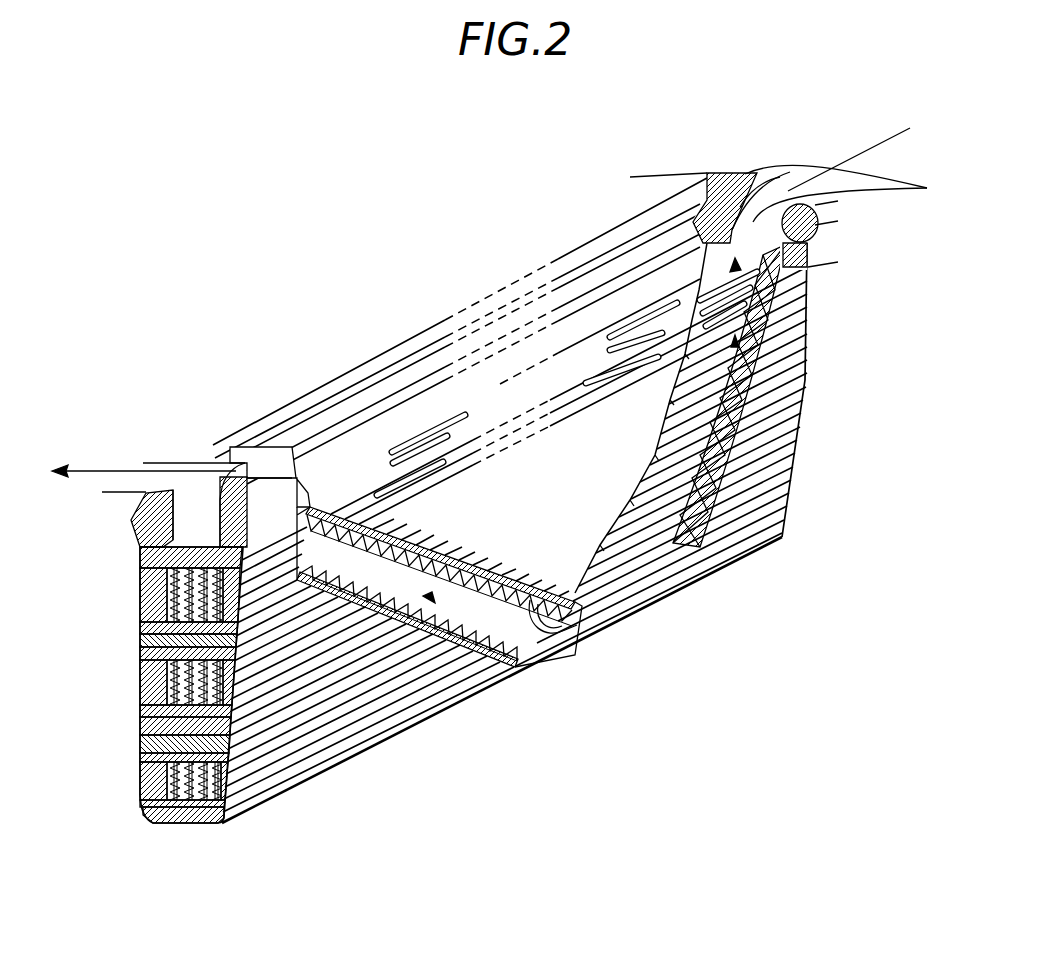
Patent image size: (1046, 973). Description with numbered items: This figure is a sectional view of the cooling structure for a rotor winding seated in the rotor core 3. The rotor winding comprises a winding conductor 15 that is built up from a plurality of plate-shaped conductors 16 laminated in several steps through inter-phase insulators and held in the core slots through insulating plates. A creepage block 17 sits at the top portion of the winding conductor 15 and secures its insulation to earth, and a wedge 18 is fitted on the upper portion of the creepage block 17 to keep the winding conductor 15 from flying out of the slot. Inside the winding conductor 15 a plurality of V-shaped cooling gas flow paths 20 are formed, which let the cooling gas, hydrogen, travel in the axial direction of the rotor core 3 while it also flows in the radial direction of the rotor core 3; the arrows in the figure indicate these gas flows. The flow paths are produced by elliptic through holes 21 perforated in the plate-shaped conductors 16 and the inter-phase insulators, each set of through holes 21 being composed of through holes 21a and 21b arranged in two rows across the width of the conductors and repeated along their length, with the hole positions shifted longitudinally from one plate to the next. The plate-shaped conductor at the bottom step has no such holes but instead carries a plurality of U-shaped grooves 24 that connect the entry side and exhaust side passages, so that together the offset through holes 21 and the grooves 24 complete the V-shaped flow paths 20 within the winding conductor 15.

The rotor core 3 is at (608, 214).
The winding conductor 15 is at (140, 650).
The plate-shaped conductors 16 is at (140, 750).
The creepage block 17 is at (140, 563).
The wedge 18 is at (131, 533).
The V-shaped cooling gas flow paths 20 is at (393, 617).
The elliptic through holes 21 is at (455, 290).
The through holes 21a is at (410, 437).
The through holes 21b is at (443, 415).
The U-shaped grooves 24 is at (563, 617).